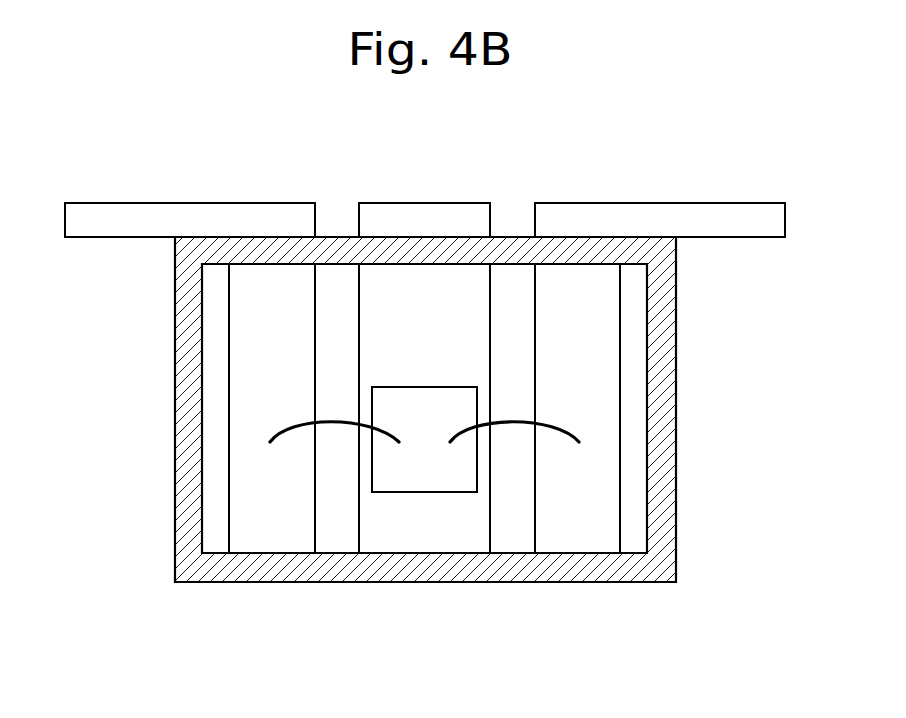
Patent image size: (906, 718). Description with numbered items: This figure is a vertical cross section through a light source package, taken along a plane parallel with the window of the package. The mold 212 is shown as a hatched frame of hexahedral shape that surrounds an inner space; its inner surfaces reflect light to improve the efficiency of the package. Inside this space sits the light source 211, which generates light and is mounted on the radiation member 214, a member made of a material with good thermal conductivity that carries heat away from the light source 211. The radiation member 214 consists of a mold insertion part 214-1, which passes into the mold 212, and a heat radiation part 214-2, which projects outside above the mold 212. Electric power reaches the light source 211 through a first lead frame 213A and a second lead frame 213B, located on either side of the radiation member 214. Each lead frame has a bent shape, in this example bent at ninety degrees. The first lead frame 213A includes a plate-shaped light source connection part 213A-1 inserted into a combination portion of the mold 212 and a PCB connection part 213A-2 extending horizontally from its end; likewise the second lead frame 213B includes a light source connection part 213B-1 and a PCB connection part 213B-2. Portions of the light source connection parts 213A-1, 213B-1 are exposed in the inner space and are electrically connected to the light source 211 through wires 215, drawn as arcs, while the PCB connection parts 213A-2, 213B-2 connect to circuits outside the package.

The light source 211 is at (395, 483).
The mold 212 is at (578, 573).
The first lead frame 213A is at (660, 326).
The light source connection part 213A-1 is at (577, 346).
The PCB connection part 213A-2 is at (668, 212).
The second lead frame 213B is at (190, 326).
The light source connection part 213B-1 is at (270, 277).
The PCB connection part 213B-2 is at (180, 212).
The radiation member 214 is at (428, 326).
The mold insertion part 214-1 is at (433, 275).
The heat radiation part 214-2 is at (400, 213).
The wires 215 is at (297, 423).